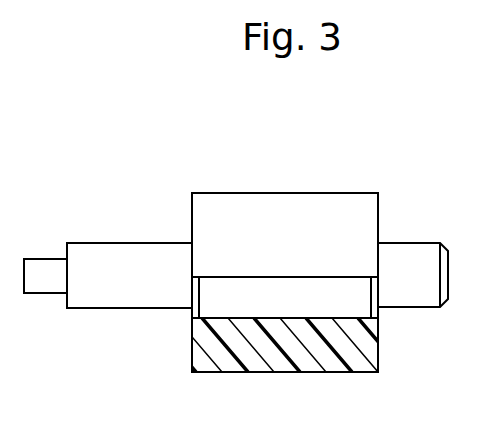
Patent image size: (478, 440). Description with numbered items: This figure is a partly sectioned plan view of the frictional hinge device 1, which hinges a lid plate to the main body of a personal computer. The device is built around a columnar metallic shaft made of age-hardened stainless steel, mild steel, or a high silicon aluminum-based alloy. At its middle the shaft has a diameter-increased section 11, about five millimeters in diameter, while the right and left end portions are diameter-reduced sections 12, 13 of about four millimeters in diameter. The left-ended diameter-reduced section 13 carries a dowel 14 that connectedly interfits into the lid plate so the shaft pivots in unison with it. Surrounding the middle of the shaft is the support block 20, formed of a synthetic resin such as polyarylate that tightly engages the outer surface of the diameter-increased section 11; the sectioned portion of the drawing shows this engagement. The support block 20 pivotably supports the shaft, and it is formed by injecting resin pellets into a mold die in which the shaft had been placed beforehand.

The frictional hinge device 1 is at (217, 155).
The diameter-increased section 11 is at (292, 303).
The diameter-reduced section 12 is at (408, 248).
The diameter-reduced section 13 is at (137, 252).
The dowel 14 is at (47, 270).
The support block 20 is at (332, 203).